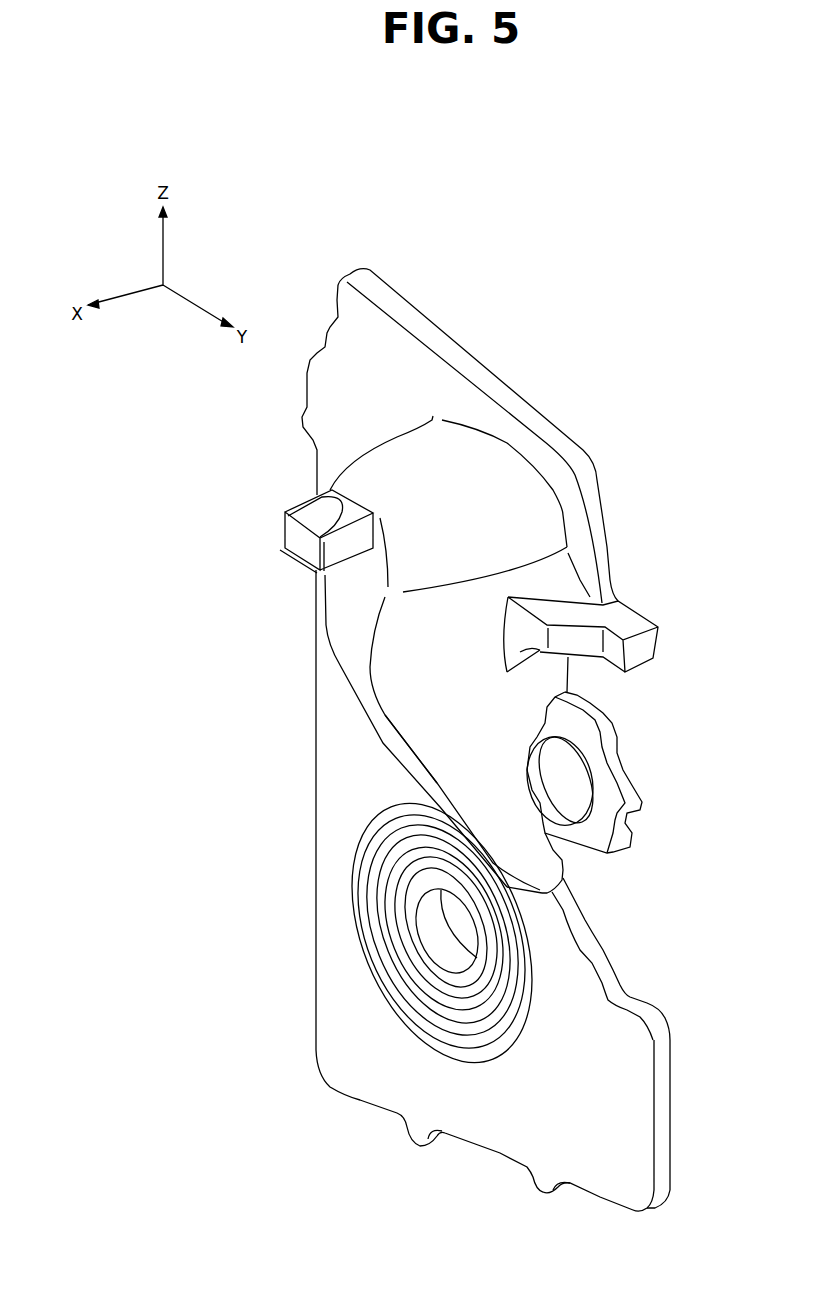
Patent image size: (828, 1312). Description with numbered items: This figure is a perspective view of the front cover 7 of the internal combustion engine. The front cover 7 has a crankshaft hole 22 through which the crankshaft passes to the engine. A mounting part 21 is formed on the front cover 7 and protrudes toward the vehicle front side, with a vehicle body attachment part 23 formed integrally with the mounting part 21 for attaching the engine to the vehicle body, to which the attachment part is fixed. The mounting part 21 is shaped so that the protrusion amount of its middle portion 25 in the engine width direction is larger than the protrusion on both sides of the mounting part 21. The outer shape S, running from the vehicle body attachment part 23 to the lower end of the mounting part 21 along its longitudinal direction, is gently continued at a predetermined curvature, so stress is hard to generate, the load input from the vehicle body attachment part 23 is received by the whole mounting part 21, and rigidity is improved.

The front cover 7 is at (493, 308).
The mounting part 21 is at (333, 598).
The crankshaft hole 22 is at (430, 933).
The vehicle body attachment part 23 is at (280, 535).
The middle portion 25 is at (347, 647).
The outer shape S is at (383, 723).